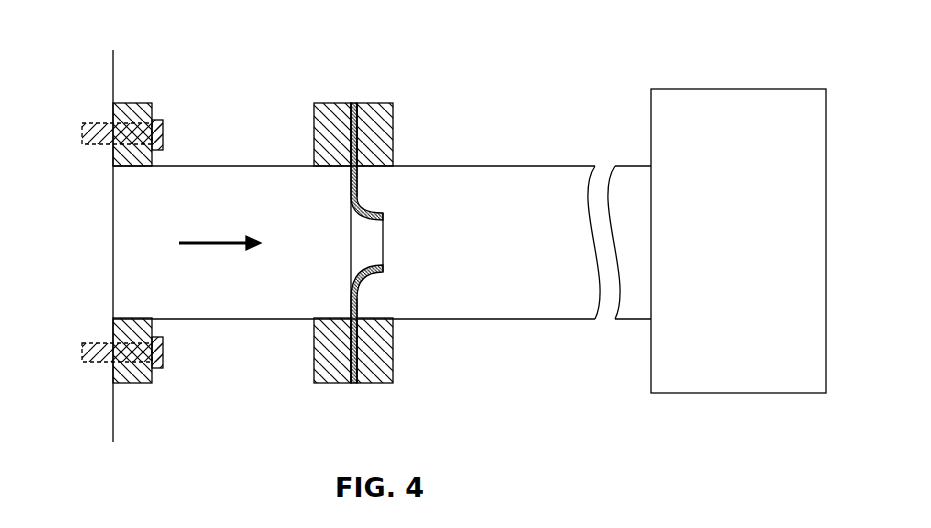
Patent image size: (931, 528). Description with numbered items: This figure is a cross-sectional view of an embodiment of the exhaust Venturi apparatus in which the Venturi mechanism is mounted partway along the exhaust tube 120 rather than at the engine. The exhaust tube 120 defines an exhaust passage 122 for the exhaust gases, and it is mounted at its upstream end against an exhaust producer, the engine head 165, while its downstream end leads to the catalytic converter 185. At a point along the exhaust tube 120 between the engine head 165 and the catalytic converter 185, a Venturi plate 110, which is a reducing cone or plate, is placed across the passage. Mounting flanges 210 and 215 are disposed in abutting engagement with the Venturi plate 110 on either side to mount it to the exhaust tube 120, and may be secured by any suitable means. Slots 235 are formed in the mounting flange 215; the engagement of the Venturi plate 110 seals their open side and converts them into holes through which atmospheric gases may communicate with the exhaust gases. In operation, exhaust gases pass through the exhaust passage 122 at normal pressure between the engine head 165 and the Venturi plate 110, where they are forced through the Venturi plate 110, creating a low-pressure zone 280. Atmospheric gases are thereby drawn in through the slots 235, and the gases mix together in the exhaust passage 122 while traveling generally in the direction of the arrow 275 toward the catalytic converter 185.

The Venturi plate 110 is at (353, 103).
The exhaust tube 120 is at (499, 166).
The exhaust passage 122 is at (512, 251).
The engine head 165 is at (90, 248).
The catalytic converter 185 is at (758, 246).
The mounting flange 210 is at (338, 103).
The mounting flange 215 is at (377, 103).
The slots 235 is at (358, 103).
The arrow 275 is at (211, 242).
The low-pressure zone 280 is at (395, 253).